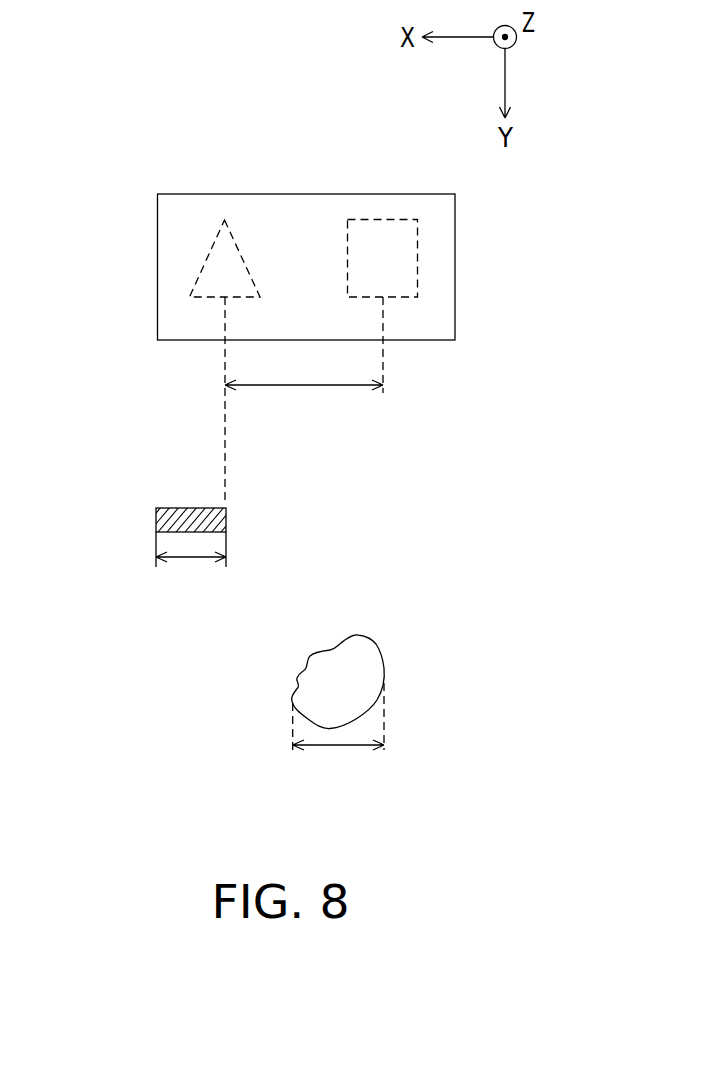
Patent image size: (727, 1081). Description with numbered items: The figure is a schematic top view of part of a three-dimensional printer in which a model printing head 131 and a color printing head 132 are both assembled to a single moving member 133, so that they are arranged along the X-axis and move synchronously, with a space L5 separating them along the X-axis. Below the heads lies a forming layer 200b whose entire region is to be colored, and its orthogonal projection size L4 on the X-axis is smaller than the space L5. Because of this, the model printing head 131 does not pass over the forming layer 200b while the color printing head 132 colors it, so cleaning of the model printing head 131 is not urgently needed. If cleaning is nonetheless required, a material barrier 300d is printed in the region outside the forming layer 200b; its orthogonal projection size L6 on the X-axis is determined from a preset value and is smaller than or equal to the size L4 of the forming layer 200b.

The moving member 133 is at (187, 194).
The model printing head 131 is at (237, 245).
The color printing head 132 is at (393, 220).
The material barrier 300d is at (138, 468).
The forming layer 200b is at (408, 660).
The orthogonal projection size of the coloring zone on the X-axis L4 is at (338, 735).
The space between the model printing head and the color printing head along the X-ax L5 is at (304, 403).
The orthogonal projection size of the material barrier on the X-axis L6 is at (191, 563).